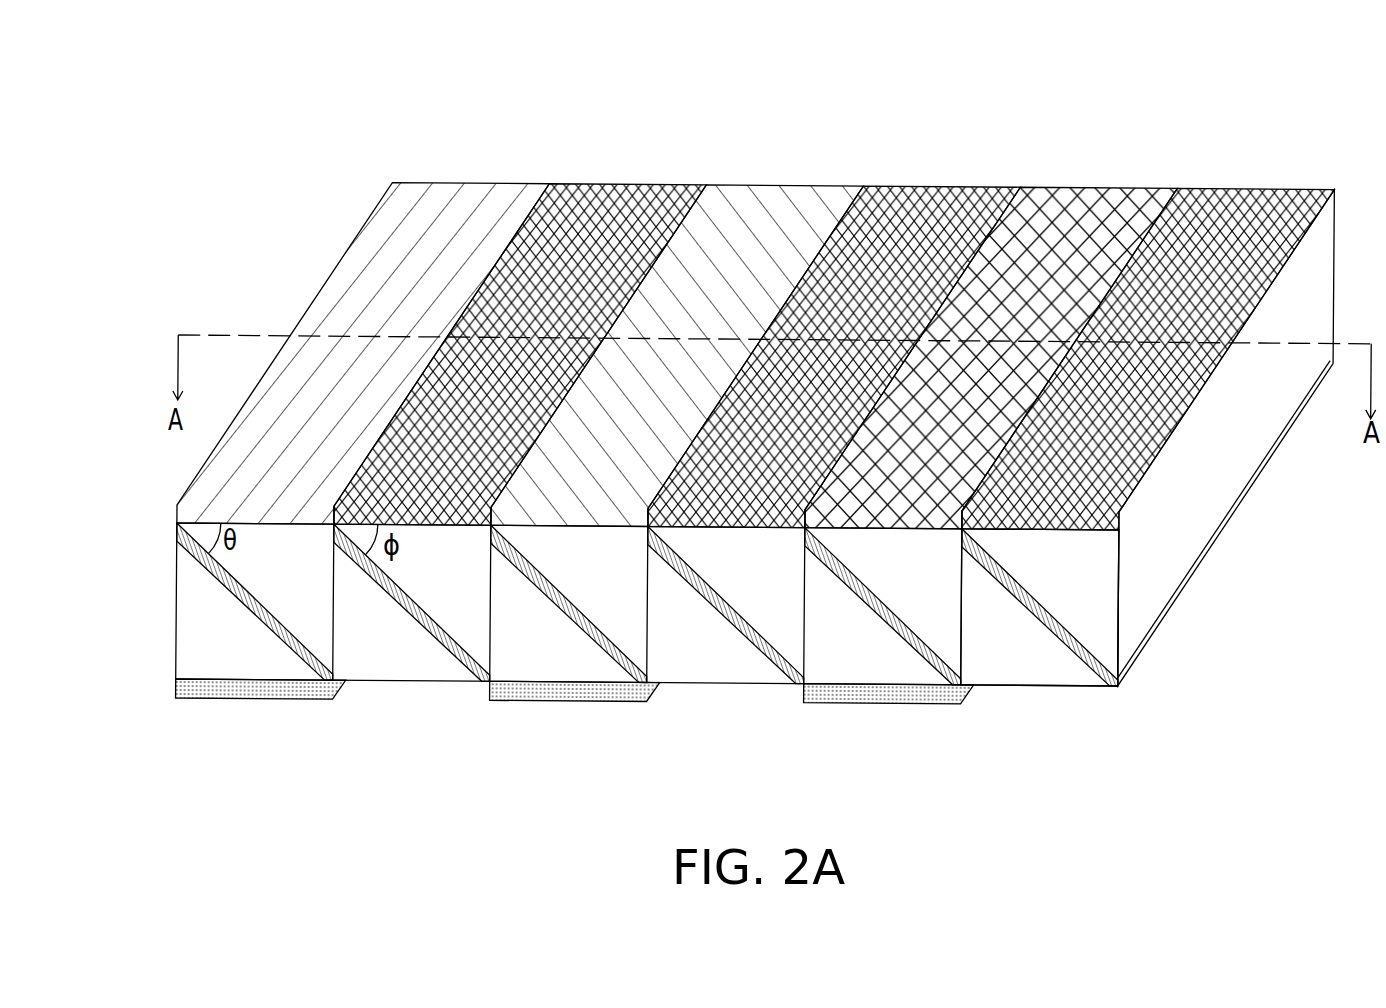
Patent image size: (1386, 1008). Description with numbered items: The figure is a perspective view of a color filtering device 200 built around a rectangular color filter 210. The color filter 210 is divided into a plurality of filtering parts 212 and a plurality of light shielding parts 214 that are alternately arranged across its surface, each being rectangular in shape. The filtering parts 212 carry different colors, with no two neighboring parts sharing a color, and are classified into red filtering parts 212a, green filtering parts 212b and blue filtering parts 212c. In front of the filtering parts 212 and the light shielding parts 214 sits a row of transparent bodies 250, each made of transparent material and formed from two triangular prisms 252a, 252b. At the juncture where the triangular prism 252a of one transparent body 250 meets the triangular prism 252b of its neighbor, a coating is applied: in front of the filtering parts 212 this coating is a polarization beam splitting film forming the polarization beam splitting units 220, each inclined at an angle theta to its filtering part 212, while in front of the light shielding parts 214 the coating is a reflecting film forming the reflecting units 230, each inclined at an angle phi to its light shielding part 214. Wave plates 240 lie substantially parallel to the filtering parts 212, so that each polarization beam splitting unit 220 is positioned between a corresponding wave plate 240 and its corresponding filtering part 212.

The color filtering device 200 is at (703, 415).
The color filter 210 is at (703, 273).
The filtering parts 212 is at (624, 302).
The red filtering parts 212a is at (485, 190).
The green filtering parts 212b is at (747, 183).
The blue filtering parts 212c is at (1077, 183).
The light shielding parts 214 is at (1148, 303).
The polarization beam splitting units 220 is at (198, 553).
The reflecting units 230 is at (450, 640).
The wave plates 240 is at (177, 688).
The transparent bodies 250 is at (961, 672).
The triangular prism 252a is at (1035, 673).
The triangular prism 252b is at (900, 597).